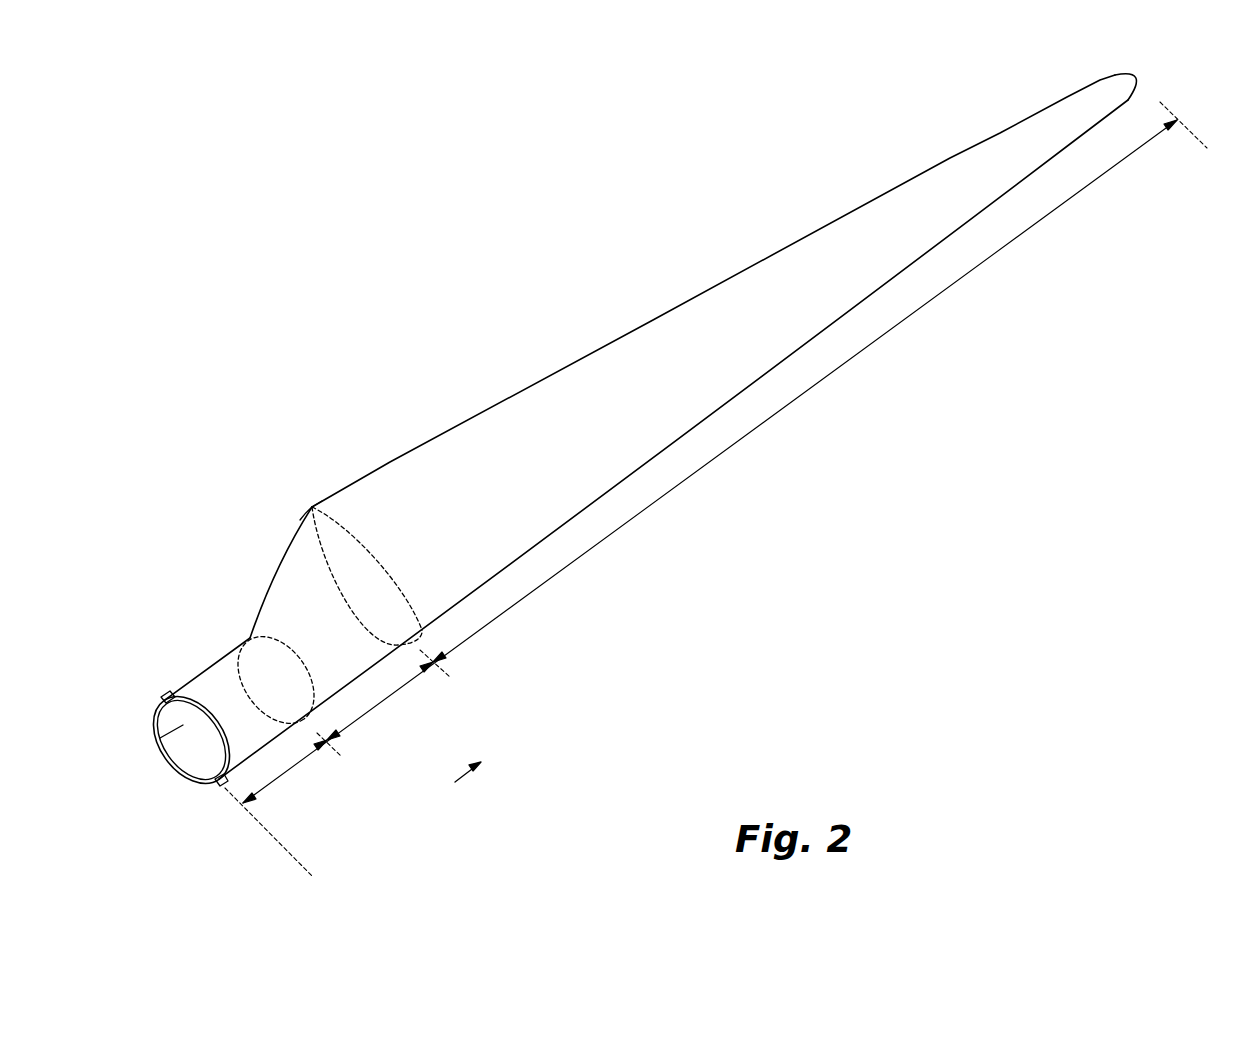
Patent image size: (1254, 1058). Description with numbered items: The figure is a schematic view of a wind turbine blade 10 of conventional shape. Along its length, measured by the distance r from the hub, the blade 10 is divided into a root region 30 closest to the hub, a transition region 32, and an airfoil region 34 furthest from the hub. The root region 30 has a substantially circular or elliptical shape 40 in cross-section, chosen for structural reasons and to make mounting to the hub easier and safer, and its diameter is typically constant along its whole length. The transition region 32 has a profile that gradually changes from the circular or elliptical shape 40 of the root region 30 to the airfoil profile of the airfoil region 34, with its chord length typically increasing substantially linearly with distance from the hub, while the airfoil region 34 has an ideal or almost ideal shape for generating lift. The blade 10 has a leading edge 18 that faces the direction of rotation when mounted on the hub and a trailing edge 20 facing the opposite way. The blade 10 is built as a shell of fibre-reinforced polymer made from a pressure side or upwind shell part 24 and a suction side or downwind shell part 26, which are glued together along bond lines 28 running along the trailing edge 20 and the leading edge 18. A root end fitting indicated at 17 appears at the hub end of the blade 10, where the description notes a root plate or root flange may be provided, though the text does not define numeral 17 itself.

The wind turbine blade 10 is at (477, 299).
The root attachment 17 is at (160, 738).
The leading edge 18 is at (840, 322).
The trailing edge 20 is at (710, 286).
The pressure side or upwind shell part 24 is at (188, 696).
The suction side or downwind shell part 26 is at (190, 779).
The bond lines 28 is at (167, 696).
The root region 30 is at (290, 770).
The transition region 32 is at (385, 699).
The airfoil region 34 is at (732, 446).
The circular or elliptical shape 40 is at (312, 507).